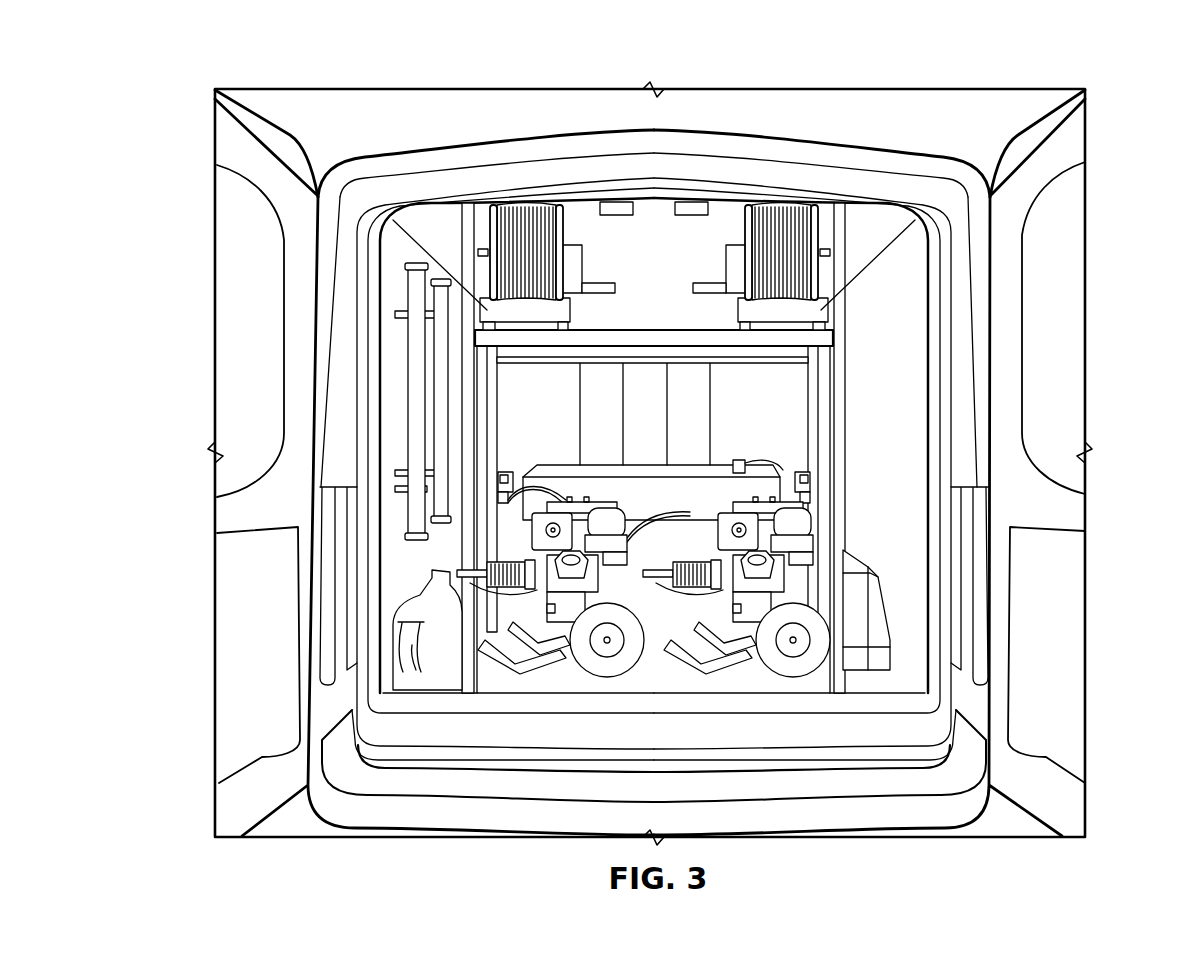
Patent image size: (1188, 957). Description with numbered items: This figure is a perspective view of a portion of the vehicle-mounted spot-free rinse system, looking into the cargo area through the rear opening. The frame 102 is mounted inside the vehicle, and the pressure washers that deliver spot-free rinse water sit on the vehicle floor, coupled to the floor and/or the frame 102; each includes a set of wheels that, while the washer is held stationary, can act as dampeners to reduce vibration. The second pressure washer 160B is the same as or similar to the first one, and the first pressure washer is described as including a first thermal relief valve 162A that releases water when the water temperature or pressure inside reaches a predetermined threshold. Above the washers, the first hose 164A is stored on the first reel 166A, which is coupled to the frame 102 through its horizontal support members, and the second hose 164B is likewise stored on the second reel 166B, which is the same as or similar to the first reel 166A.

The frame 102 is at (893, 278).
The first hose 164A is at (523, 217).
The second hose 164B is at (780, 217).
The first reel 166A is at (487, 310).
The second reel 166B is at (821, 310).
The first thermal relief valve 162A is at (577, 603).
The second pressure washer 160B is at (755, 603).